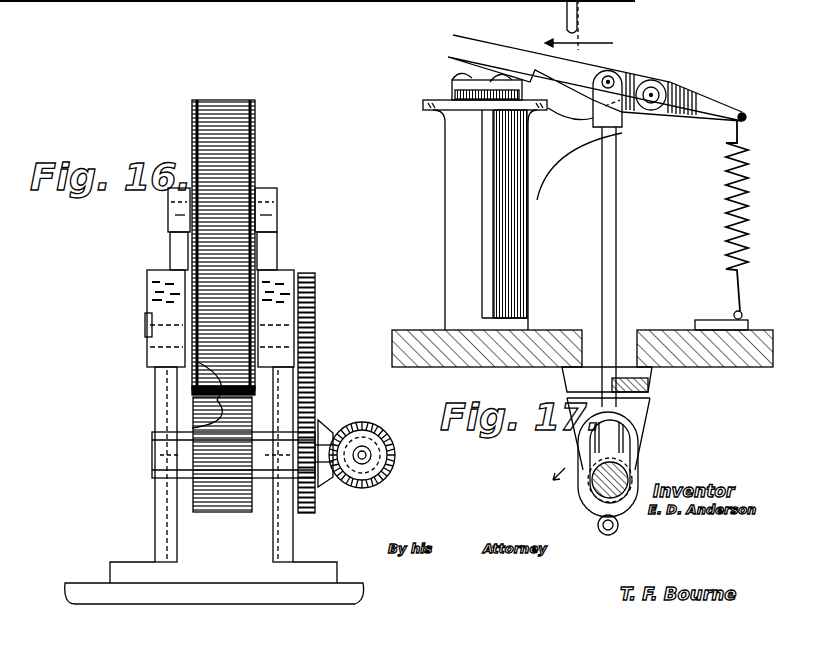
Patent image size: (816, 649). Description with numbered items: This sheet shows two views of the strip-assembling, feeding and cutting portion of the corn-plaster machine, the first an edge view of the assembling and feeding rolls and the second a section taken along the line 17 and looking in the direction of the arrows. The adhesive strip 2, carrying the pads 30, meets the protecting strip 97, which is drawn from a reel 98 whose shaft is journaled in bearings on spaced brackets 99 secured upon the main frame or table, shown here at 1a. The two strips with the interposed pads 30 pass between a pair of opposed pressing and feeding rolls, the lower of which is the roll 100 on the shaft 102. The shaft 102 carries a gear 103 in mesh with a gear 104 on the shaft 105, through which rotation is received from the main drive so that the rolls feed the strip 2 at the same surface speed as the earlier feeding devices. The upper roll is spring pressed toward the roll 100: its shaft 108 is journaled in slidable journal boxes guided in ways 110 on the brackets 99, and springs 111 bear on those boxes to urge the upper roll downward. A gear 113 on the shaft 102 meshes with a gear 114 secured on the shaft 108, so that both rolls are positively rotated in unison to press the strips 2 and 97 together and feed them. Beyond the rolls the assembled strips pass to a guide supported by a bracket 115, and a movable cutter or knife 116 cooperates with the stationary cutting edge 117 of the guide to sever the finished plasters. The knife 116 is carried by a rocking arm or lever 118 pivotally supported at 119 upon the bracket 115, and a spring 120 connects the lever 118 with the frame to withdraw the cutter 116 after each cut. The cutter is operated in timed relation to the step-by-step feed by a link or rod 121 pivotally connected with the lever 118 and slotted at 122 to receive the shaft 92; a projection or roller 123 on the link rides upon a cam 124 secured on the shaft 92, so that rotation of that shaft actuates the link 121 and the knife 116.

In FIG. 16, the base plate 1a is at (88, 593).
In FIG. 17, the base plate 1a is at (557, 343).
In FIG. 16, the strip 2 is at (190, 425).
In FIG. 17, the strip 2 is at (473, 102).
In FIG. 17, the section line 17 is at (580, 25).
In FIG. 16, the pads 30 is at (188, 398).
In FIG. 17, the pads 30 is at (487, 107).
In FIG. 17, the shaft 92 is at (630, 473).
In FIG. 16, the protecting strip 97 is at (242, 158).
In FIG. 17, the protecting strip 97 is at (474, 80).
In FIG. 16, the reel 98 is at (258, 112).
In FIG. 16, the spaced brackets 99 is at (172, 250).
In FIG. 16, the pressing and feeding roll 100 is at (220, 513).
In FIG. 16, the shaft 102 is at (290, 456).
In FIG. 16, the gear 103 is at (328, 484).
In FIG. 16, the gear 104 is at (386, 478).
In FIG. 16, the shaft 105 is at (366, 455).
In FIG. 16, the shaft 108 is at (147, 325).
In FIG. 16, the ways 110 is at (147, 335).
In FIG. 16, the springs 111 is at (150, 290).
In FIG. 16, the gear 113 is at (320, 412).
In FIG. 16, the gear 114 is at (326, 328).
In FIG. 17, the bracket 115 is at (465, 245).
In FIG. 17, the movable cutter or knife 116 is at (450, 56).
In FIG. 17, the stationary cutting edge 117 is at (522, 128).
In FIG. 17, the rocking arm or lever 118 is at (580, 72).
In FIG. 17, the pivot 119 is at (660, 83).
In FIG. 17, the spring 120 is at (725, 192).
In FIG. 17, the link or rod 121 is at (608, 257).
In FIG. 17, the slot 122 is at (627, 440).
In FIG. 17, the projection or roller 123 is at (618, 525).
In FIG. 17, the cam 124 is at (577, 493).